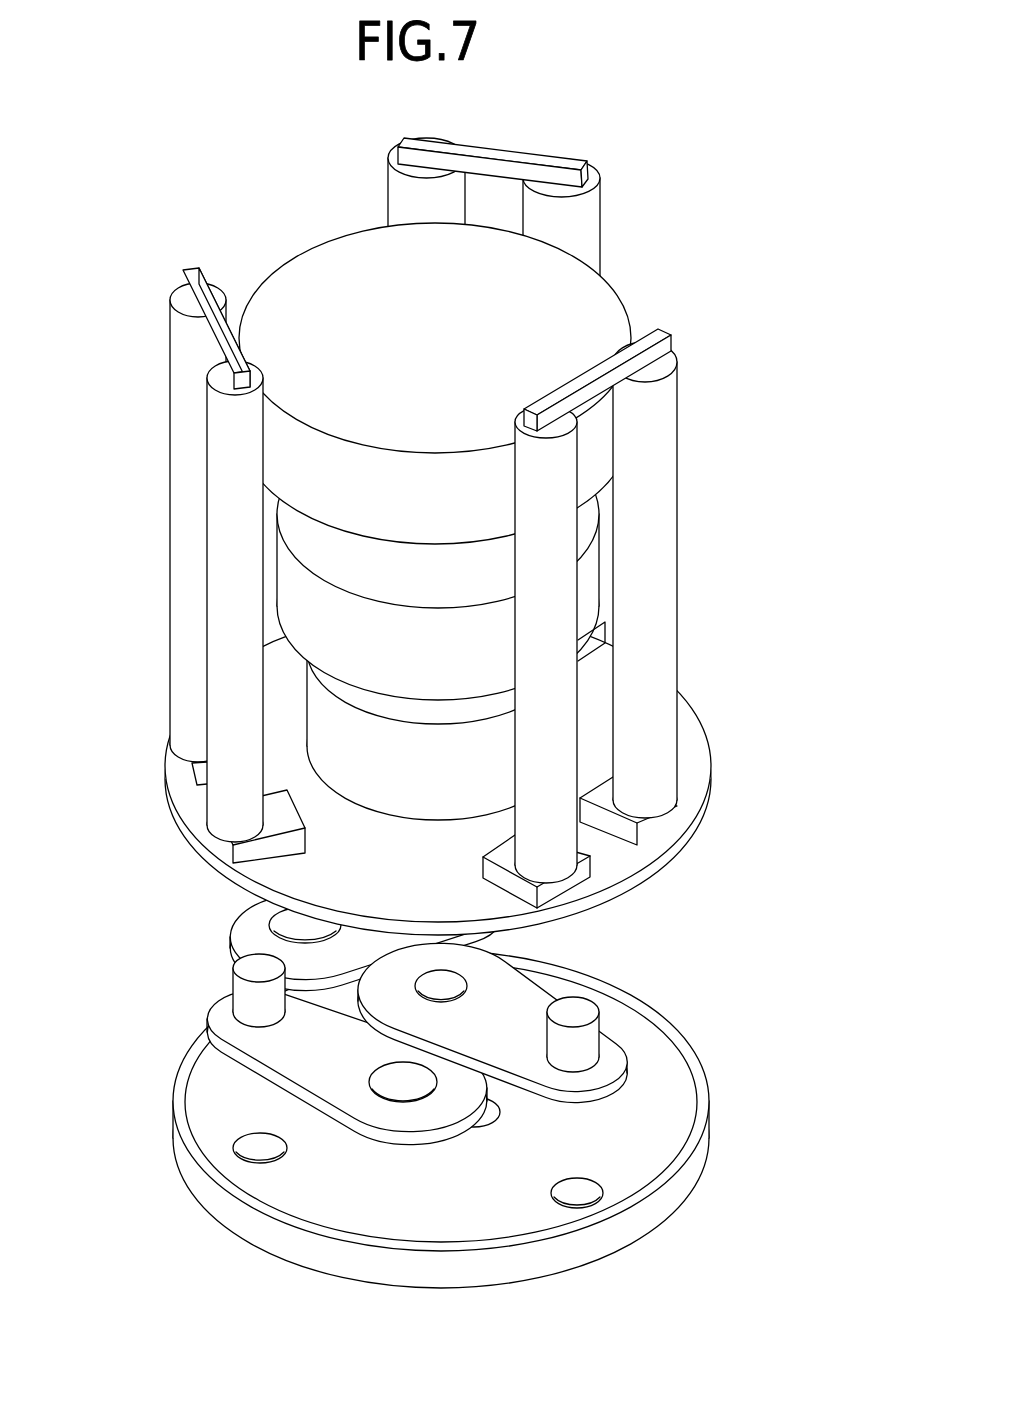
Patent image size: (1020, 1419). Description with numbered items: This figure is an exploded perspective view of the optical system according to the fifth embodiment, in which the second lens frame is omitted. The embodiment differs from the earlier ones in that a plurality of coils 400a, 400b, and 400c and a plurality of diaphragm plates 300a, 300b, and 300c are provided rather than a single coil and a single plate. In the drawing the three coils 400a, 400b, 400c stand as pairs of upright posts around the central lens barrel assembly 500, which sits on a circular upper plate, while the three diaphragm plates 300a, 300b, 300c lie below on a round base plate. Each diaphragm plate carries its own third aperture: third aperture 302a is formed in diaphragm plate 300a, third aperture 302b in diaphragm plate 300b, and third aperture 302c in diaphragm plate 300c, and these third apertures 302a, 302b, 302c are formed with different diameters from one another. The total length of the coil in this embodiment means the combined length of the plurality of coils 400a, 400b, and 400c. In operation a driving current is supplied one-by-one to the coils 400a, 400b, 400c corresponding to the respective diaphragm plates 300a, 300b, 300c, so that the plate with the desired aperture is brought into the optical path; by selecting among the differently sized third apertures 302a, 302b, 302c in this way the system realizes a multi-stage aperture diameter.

The lens barrel assembly 500 is at (350, 280).
The coil 400a is at (655, 498).
The coil 400b is at (578, 228).
The coil 400c is at (190, 405).
The diaphragm plate 300a is at (482, 963).
The diaphragm plate 300b is at (238, 900).
The diaphragm plate 300c is at (297, 1048).
The third aperture 302a is at (545, 968).
The third aperture 302b is at (243, 935).
The third aperture 302c is at (368, 1080).